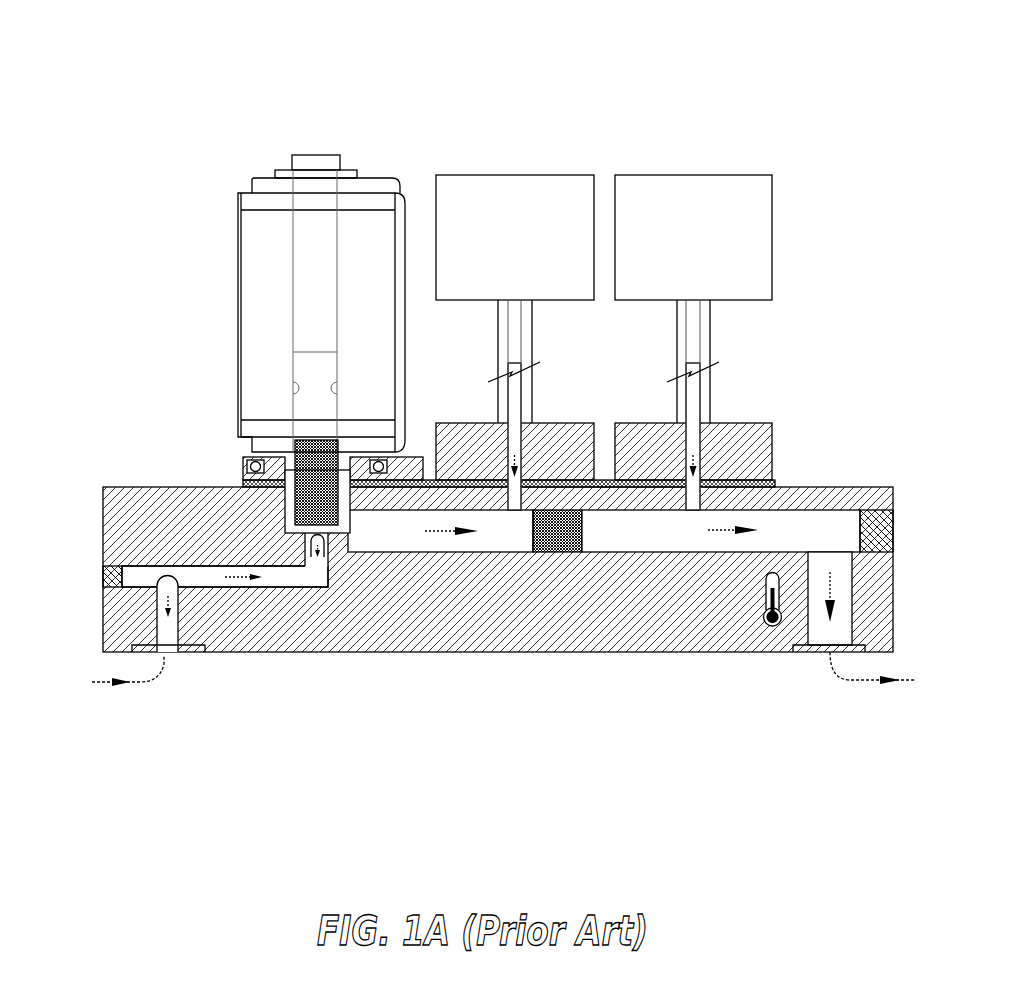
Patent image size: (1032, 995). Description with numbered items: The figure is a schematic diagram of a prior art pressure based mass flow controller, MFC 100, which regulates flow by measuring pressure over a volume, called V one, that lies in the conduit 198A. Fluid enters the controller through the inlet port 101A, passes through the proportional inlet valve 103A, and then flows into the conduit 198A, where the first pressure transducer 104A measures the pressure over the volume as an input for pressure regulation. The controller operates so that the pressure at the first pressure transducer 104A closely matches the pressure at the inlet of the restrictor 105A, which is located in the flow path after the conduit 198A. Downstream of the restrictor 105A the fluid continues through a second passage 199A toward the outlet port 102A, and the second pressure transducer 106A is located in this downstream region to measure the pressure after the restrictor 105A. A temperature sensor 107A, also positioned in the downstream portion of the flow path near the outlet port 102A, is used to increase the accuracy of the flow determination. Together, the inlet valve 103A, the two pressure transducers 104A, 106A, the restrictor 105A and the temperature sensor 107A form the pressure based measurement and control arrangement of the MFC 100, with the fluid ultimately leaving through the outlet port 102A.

The pressure based mass flow controller (MFC) 100 is at (760, 33).
The inlet port 101A is at (178, 657).
The outlet port 102A is at (815, 655).
The proportional inlet valve 103A is at (248, 455).
The first pressure transducer 104A is at (530, 251).
The restrictor 105A is at (565, 555).
The second pressure transducer 106A is at (700, 251).
The temperature sensor 107A is at (753, 592).
The conduit 198A is at (400, 522).
The second flow channel 199A is at (785, 517).